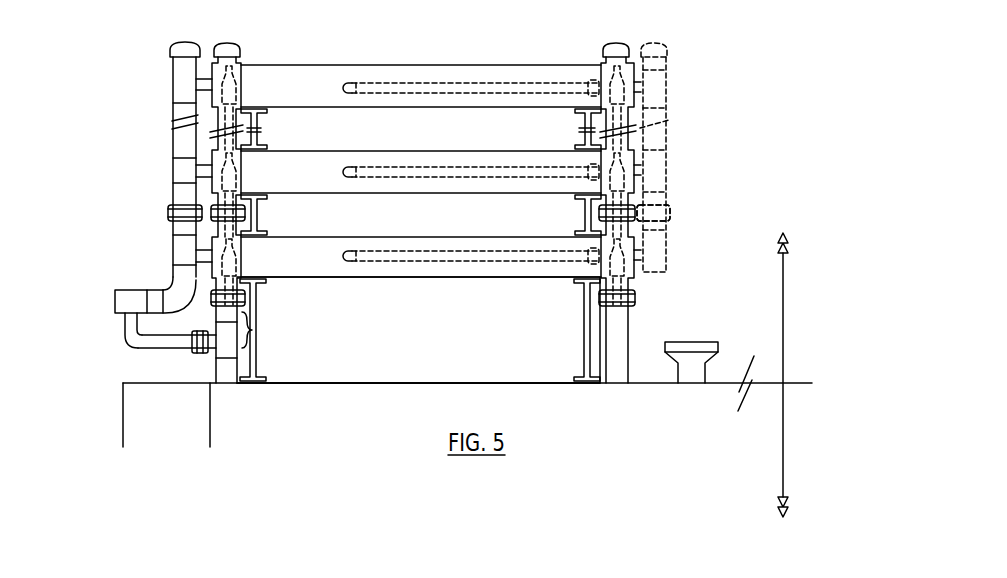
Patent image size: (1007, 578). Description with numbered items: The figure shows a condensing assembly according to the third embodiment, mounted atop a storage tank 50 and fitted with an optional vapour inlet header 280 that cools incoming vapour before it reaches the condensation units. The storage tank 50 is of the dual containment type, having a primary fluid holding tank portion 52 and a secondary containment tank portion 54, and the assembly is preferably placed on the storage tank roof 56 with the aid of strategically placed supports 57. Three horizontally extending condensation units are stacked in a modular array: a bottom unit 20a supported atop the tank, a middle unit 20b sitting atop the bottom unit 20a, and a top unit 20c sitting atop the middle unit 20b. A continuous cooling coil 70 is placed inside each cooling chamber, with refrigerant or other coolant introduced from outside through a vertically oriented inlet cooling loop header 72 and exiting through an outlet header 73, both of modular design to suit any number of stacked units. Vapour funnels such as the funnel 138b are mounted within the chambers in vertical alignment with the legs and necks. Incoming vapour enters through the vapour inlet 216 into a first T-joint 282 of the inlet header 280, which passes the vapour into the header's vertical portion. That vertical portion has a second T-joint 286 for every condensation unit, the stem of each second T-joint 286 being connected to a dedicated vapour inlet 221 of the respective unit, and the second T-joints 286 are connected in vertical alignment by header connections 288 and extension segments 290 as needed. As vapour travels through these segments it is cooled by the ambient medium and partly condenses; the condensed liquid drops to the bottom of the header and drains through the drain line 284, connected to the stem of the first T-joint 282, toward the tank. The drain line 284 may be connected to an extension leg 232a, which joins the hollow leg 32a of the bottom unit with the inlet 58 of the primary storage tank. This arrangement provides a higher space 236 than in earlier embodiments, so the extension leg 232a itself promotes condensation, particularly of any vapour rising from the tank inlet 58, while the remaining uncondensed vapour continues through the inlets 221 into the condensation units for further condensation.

The vapour inlet header 280 is at (180, 40).
The second T-joint 286 is at (171, 89).
The extension segment 290 is at (171, 137).
The header connection 288 is at (166, 212).
The vapour funnel 138b is at (222, 175).
The vapour inlet 221 is at (200, 78).
The vapour inlet 216 is at (112, 303).
The first T-joint 282 is at (122, 318).
The drain line 284 is at (152, 350).
The inlet 58 is at (222, 373).
The bottom condensation unit 20a is at (677, 258).
The middle condensation unit 20b is at (677, 172).
The top condensation unit 20c is at (677, 90).
The cooling coil 70 is at (457, 87).
The space 236 is at (410, 341).
The leg 32a is at (241, 285).
The extension leg 232a is at (252, 330).
The support 57 is at (576, 330).
The storage tank roof 56 is at (345, 385).
The inlet cooling loop header 72 is at (670, 67).
The outlet header 73 is at (653, 213).
The storage tank 50 is at (707, 451).
The secondary containment tank portion 54 is at (127, 432).
The primary fluid holding tank portion 52 is at (213, 432).